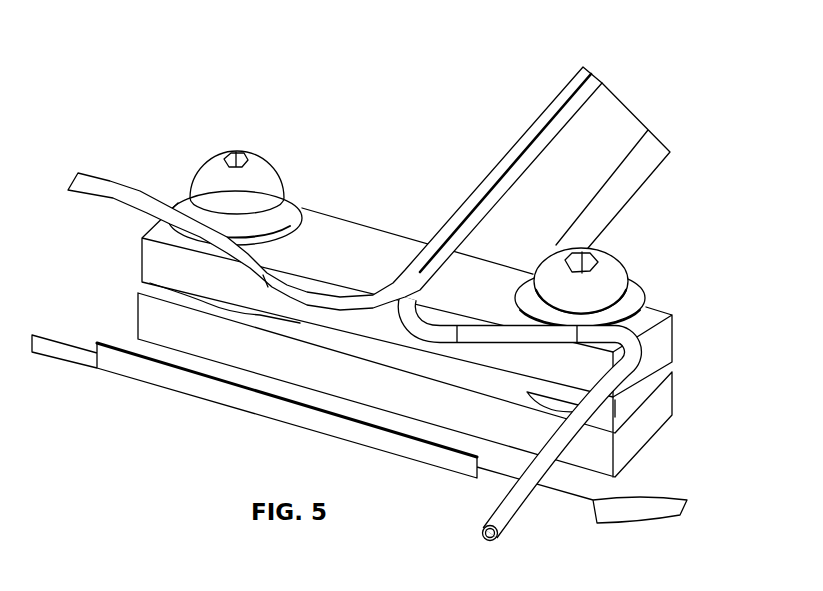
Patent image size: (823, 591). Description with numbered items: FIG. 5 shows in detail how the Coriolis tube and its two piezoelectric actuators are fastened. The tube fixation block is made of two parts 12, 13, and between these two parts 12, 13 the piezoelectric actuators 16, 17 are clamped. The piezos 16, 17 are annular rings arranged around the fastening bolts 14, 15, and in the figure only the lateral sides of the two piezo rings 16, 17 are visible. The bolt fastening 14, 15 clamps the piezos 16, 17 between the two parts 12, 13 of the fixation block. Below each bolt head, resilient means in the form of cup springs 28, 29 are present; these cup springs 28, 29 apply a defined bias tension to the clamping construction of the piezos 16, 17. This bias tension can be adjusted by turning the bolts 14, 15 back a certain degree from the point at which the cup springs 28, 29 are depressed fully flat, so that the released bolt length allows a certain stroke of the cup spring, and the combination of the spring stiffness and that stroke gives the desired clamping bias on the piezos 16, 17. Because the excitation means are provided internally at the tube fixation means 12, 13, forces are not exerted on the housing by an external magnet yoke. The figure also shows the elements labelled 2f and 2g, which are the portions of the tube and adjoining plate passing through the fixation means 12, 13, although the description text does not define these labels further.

The tube fixation block part 12 is at (644, 433).
The tube fixation block part 13 is at (665, 360).
The fastening bolt 14 is at (233, 162).
The fastening bolt 15 is at (582, 262).
The piezoelectric actuator 16 is at (205, 302).
The piezoelectric actuator 17 is at (557, 403).
The cup spring 28 is at (288, 211).
The cup spring 29 is at (637, 311).
The strap 2f is at (562, 97).
The plate 2g is at (583, 98).